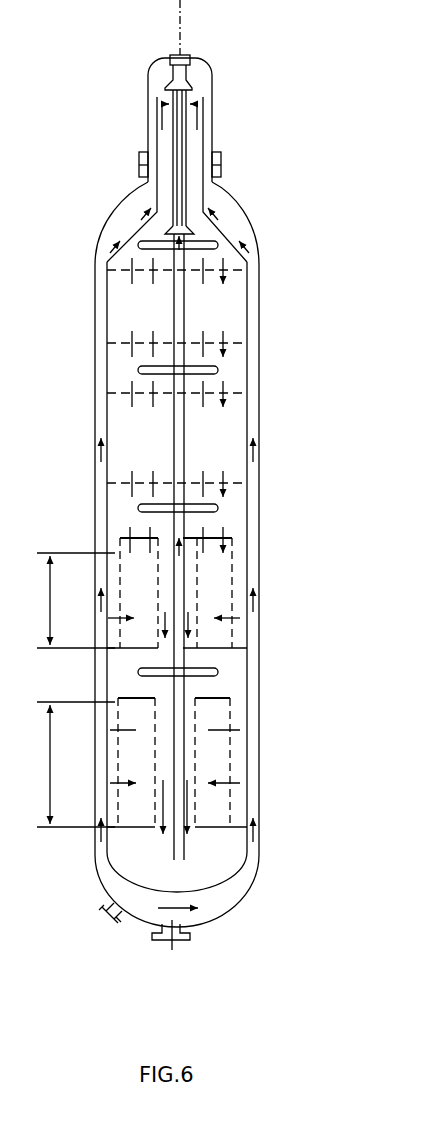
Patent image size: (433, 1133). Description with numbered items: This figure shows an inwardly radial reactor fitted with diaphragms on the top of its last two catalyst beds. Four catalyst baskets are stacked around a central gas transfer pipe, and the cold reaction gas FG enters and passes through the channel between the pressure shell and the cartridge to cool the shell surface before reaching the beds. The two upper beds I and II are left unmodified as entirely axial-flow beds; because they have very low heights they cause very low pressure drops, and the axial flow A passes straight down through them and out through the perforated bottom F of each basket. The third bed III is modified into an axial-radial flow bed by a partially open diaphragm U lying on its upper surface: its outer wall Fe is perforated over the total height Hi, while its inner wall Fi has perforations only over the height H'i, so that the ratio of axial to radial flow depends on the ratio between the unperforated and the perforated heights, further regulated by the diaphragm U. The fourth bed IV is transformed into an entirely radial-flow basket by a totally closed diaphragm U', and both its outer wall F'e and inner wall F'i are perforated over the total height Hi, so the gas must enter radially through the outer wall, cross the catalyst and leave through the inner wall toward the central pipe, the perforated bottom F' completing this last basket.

The first catalyst basket I is at (227, 313).
The second catalyst basket II is at (227, 435).
The third catalyst basket III is at (208, 590).
The fourth catalyst basket IV is at (215, 763).
The partially open diaphragm U is at (218, 518).
The totally closed diaphragm U' is at (221, 669).
The axial flow A is at (132, 523).
The outer wall of basket III Fe is at (233, 598).
The inner wall of basket III Fi is at (200, 635).
The outer wall of basket IV F'e is at (269, 758).
The inner wall of basket IV F'i is at (257, 807).
The perforated bottom F is at (186, 903).
The perforated bottom F' is at (210, 881).
The cold reaction gas FG is at (122, 899).
The total basket height Hi is at (76, 764).
The perforated height H'i is at (75, 600).